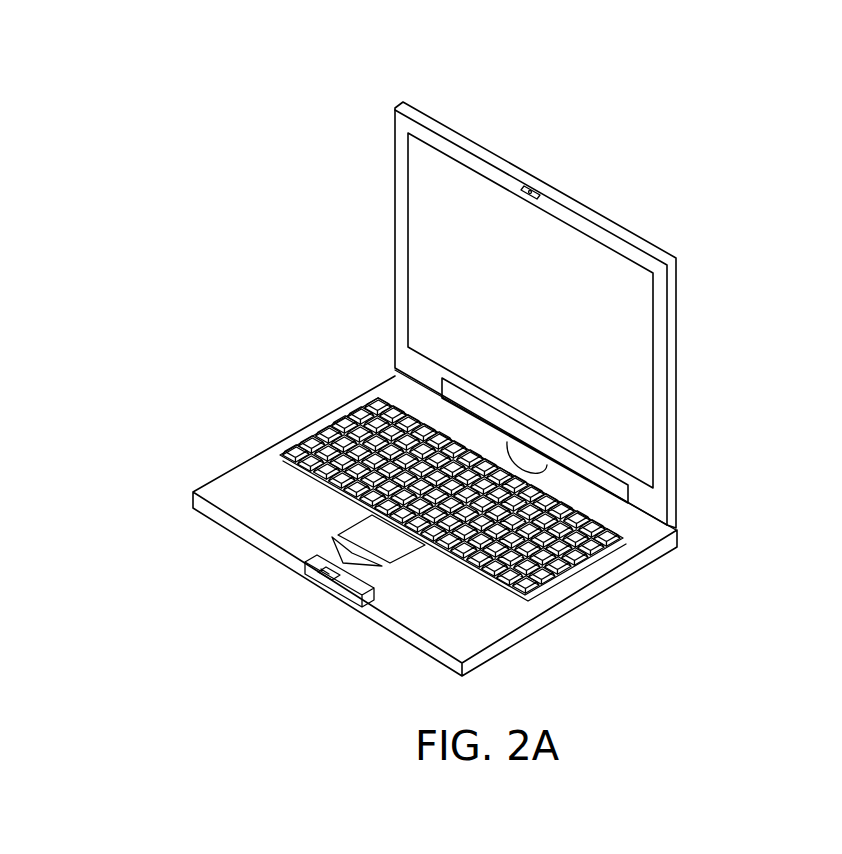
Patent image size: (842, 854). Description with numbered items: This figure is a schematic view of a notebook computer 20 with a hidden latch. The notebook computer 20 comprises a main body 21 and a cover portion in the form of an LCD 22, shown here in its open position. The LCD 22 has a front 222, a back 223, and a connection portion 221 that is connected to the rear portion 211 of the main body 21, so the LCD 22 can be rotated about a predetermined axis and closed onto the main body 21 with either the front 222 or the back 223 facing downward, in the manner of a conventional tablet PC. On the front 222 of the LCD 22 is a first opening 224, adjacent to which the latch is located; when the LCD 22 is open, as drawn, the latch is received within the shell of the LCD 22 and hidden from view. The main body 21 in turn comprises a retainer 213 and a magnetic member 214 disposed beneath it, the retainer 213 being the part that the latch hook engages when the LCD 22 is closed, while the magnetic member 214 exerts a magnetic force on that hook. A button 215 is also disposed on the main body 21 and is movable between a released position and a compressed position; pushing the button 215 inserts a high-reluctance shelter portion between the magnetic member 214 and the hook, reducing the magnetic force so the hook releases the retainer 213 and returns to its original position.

The notebook computer 20 is at (107, 54).
The main body 21 is at (540, 634).
The rear portion 211 is at (677, 538).
The retainer 213 is at (292, 551).
The magnetic member 214 is at (343, 602).
The button 215 is at (322, 583).
The LCD 22 is at (692, 378).
The connection portion 221 is at (677, 513).
The front 222 is at (420, 187).
The back 223 is at (442, 121).
The first opening 224 is at (513, 182).